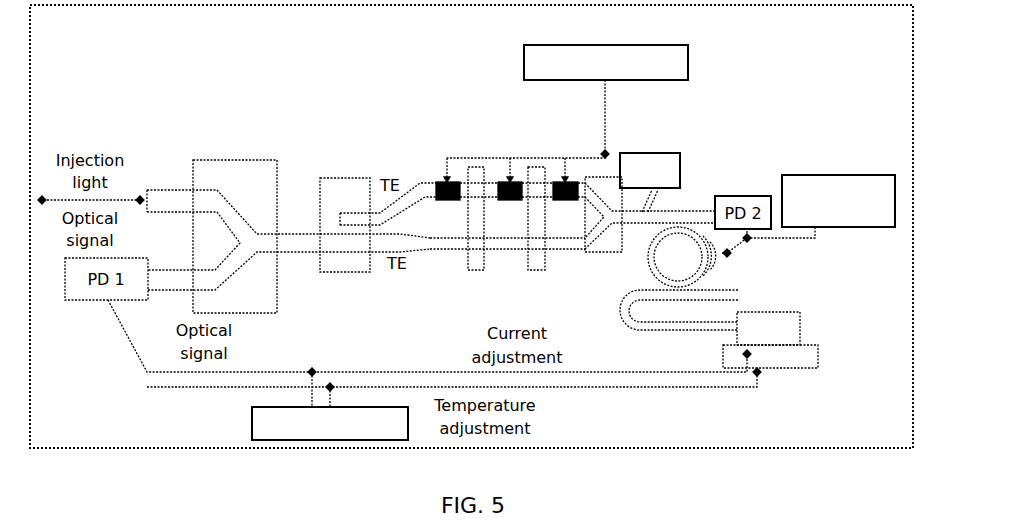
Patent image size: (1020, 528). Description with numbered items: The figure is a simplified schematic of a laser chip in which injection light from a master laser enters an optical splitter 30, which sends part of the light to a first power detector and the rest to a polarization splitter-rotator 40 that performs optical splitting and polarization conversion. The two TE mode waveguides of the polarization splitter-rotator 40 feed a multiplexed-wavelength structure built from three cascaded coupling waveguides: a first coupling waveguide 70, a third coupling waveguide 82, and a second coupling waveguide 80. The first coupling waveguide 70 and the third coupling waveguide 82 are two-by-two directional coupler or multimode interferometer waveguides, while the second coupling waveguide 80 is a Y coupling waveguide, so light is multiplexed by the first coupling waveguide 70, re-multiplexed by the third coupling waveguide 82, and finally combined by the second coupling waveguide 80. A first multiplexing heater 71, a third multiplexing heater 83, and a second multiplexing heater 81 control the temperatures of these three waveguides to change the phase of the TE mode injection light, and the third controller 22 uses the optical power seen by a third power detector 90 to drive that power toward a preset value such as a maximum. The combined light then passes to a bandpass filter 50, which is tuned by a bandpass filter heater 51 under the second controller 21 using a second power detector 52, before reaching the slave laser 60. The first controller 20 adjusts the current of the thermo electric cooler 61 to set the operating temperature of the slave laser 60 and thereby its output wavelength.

The first controller 20 is at (252, 427).
The second controller 21 is at (803, 173).
The third controller 22 is at (582, 43).
The optical splitter 30 is at (237, 190).
The polarization splitter-rotator 40 is at (340, 180).
The bandpass filter 50 is at (640, 265).
The bandpass filter heater 51 is at (703, 233).
The second power detector 52 is at (733, 196).
The slave laser 60 is at (745, 322).
The thermo electric cooler 61 is at (803, 352).
The first coupling waveguide 70 is at (470, 271).
The first multiplexing heater 71 is at (445, 180).
The second coupling waveguide 80 is at (590, 246).
The second multiplexing heater 81 is at (560, 172).
The third coupling waveguide 82 is at (528, 266).
The third multiplexing heater 83 is at (500, 175).
The third power detector 90 is at (655, 150).